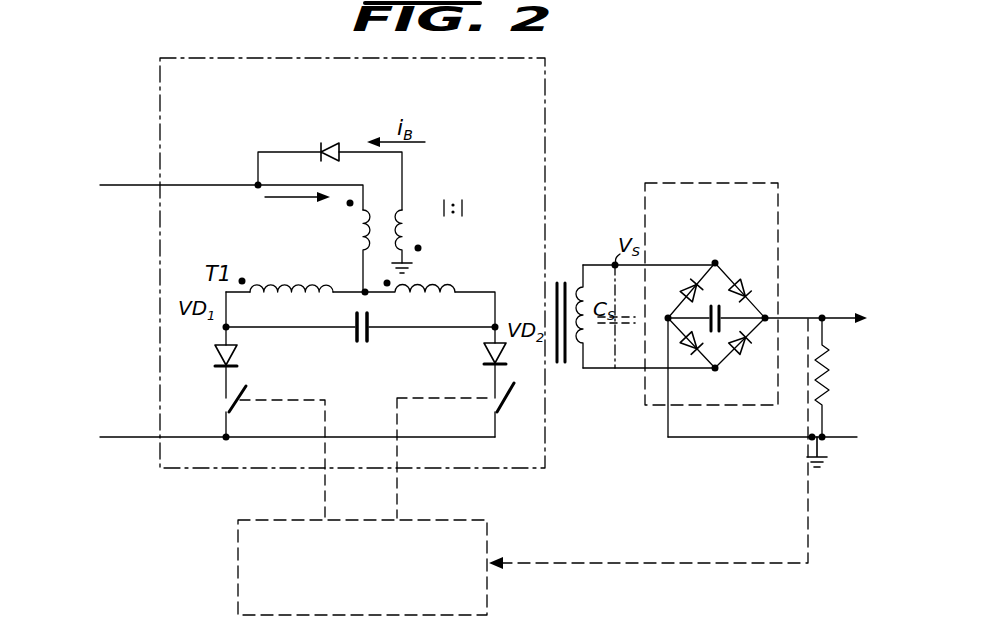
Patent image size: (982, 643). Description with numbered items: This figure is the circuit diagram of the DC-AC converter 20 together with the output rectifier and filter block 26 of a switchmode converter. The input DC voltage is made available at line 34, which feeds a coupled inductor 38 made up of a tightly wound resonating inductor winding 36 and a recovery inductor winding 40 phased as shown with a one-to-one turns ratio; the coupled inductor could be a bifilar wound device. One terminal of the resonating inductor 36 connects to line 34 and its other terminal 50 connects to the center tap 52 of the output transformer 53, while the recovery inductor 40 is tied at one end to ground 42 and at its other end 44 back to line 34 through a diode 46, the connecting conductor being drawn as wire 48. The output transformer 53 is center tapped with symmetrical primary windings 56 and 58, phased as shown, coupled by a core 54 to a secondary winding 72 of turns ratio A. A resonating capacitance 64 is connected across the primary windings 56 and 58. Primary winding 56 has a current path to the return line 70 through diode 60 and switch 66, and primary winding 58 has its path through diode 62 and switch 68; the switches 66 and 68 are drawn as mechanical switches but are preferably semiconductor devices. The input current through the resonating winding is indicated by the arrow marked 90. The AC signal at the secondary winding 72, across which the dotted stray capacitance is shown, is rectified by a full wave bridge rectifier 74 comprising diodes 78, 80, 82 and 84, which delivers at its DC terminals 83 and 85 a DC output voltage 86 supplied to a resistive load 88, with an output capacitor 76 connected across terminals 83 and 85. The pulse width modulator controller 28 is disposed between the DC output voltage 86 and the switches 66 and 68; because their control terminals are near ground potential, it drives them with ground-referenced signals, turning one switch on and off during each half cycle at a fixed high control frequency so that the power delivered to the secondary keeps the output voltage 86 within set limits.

The DC-AC converter 20 is at (548, 100).
The output rectifier and filter block 26 is at (726, 182).
The pulse width modulator controller 28 is at (490, 604).
The input line 34 is at (143, 187).
The resonating inductor winding 36 is at (357, 223).
The coupled inductor 38 is at (387, 205).
The recovery inductor winding 40 is at (410, 226).
The ground 42 is at (414, 268).
The other end of recovery inductor 44 is at (407, 165).
The diode 46 is at (336, 143).
The conductor 48 is at (273, 150).
The other terminal of resonating inductor 50 is at (365, 280).
The center tap 52 is at (370, 295).
The output transformer 53 is at (374, 305).
The core 54 is at (357, 300).
The primary winding 56 is at (293, 300).
The primary winding 58 is at (427, 300).
The diode 60 is at (238, 360).
The diode 62 is at (487, 350).
The resonating capacitance 64 is at (360, 347).
The switch 66 is at (238, 388).
The switch 68 is at (488, 397).
The return line 70 is at (131, 460).
The secondary winding 72 is at (598, 353).
The full wave bridge rectifier 74 is at (683, 378).
The output capacitor 76 is at (705, 315).
The diode 78 is at (685, 287).
The diode 80 is at (717, 264).
The diode 82 is at (690, 339).
The DC terminal 83 is at (667, 315).
The diode 84 is at (742, 345).
The DC terminal 85 is at (755, 272).
The DC output voltage 86 is at (785, 320).
The load 88 is at (830, 376).
The input current path 90 is at (283, 196).